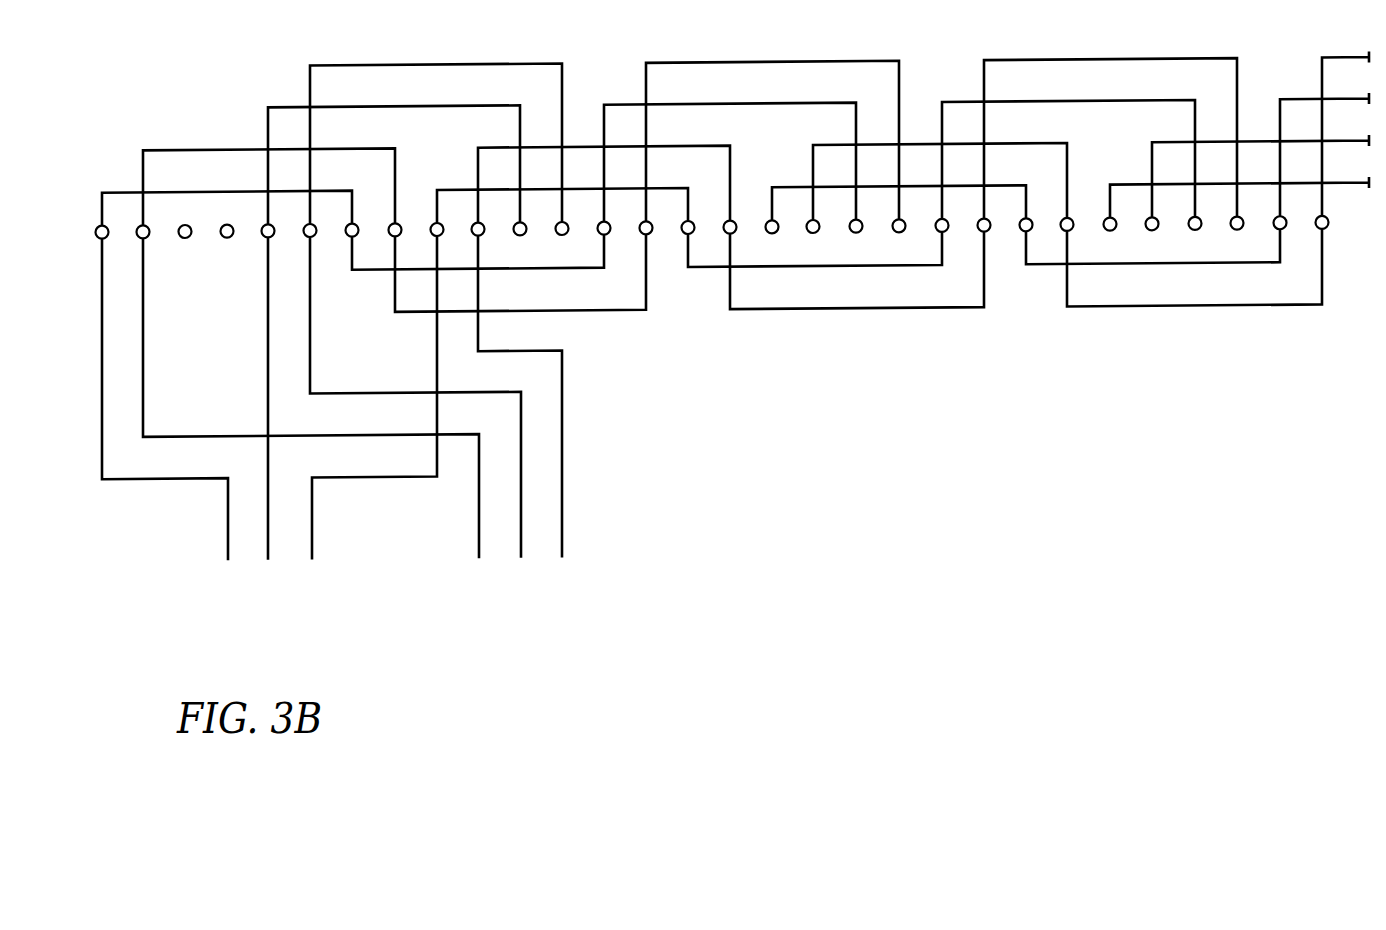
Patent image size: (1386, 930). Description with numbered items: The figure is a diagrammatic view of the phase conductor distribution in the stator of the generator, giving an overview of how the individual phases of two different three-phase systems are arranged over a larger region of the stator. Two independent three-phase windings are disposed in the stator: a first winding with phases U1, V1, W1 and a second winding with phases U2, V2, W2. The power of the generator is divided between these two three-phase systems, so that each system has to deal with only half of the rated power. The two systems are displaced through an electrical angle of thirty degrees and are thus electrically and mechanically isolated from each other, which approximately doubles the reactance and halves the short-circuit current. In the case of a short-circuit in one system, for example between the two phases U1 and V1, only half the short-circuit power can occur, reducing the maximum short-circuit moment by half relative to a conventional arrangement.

The first three-phase winding phase U U1 is at (176, 418).
The first three-phase winding phase V V1 is at (275, 417).
The first three-phase winding phase W W1 is at (367, 417).
The second three-phase winding phase U U2 is at (322, 417).
The second three-phase winding phase V V2 is at (426, 416).
The second three-phase winding phase W W2 is at (535, 416).